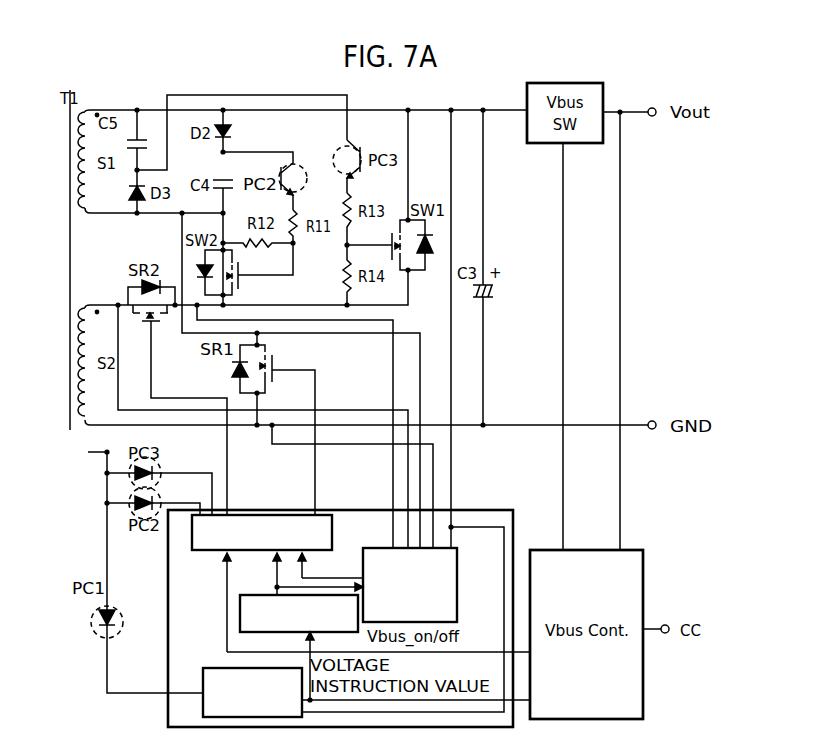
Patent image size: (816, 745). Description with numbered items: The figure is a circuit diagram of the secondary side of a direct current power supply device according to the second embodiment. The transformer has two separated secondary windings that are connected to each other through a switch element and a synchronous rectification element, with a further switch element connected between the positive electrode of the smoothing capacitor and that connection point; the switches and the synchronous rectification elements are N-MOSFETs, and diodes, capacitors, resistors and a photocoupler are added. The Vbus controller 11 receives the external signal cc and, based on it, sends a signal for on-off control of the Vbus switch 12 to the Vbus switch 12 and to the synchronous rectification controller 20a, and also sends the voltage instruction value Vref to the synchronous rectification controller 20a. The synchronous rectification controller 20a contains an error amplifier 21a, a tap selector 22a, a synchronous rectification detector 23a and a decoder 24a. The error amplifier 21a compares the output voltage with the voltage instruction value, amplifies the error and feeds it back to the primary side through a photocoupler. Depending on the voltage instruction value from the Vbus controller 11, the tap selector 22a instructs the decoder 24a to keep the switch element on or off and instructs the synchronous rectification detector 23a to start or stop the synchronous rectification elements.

The Vbus controller 11 is at (645, 552).
The Vbus switch 12 is at (537, 147).
The synchronous rectification controller 20a is at (498, 510).
The error amplifier 21a is at (212, 668).
The tap selector 22a is at (254, 595).
The synchronous rectification detector 23a is at (457, 584).
The decoder 24a is at (332, 535).